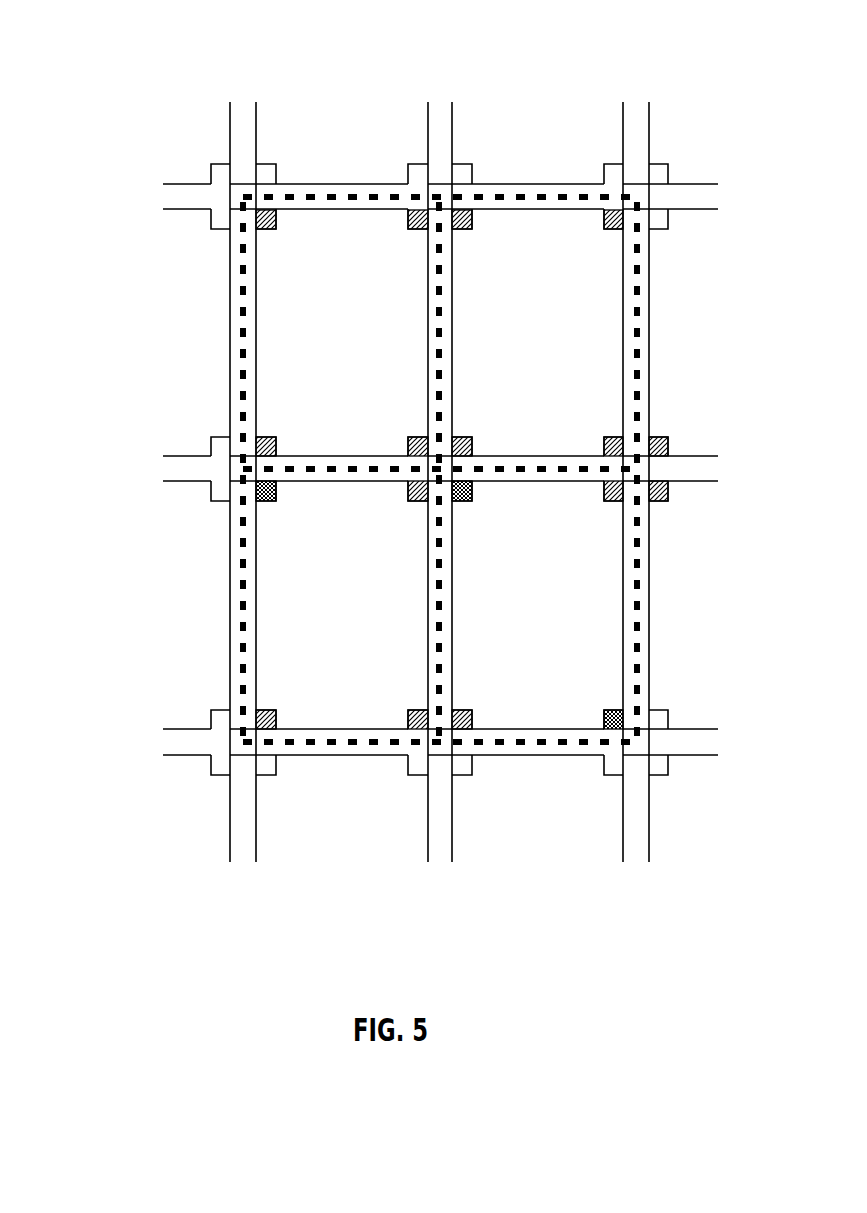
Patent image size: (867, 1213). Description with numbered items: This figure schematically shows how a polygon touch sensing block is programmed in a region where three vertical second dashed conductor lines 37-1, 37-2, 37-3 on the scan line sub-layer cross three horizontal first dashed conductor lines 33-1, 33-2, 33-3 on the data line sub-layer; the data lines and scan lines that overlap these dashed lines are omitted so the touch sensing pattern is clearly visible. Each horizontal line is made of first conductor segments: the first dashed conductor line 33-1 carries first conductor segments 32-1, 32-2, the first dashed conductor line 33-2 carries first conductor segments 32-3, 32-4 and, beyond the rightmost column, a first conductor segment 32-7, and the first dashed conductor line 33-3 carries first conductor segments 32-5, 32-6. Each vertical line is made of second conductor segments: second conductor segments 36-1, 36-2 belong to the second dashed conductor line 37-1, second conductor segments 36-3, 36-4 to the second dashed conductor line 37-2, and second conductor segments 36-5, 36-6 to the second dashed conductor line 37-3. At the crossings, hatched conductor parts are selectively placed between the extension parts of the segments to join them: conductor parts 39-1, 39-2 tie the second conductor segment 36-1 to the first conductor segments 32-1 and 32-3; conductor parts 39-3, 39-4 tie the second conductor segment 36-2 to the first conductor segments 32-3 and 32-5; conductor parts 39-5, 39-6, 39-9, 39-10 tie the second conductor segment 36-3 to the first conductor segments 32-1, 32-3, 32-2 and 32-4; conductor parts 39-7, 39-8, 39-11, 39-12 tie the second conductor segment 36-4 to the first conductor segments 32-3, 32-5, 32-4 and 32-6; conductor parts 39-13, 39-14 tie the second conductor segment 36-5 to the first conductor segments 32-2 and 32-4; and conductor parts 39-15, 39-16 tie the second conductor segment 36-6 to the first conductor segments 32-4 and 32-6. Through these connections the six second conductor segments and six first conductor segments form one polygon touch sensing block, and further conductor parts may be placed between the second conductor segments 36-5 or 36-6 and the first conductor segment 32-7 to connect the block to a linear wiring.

The second dashed conductor line 37-1 is at (243, 72).
The second dashed conductor line 37-2 is at (440, 72).
The second dashed conductor line 37-3 is at (637, 72).
The first dashed conductor line 33-1 is at (140, 198).
The first dashed conductor line 33-2 is at (140, 468).
The first dashed conductor line 33-3 is at (140, 742).
The first conductor segment 32-1 is at (345, 183).
The first conductor segment 32-2 is at (541, 183).
The first conductor segment 32-3 is at (346, 456).
The first conductor segment 32-4 is at (543, 456).
The first conductor segment 32-5 is at (345, 756).
The first conductor segment 32-6 is at (541, 756).
The first conductor segment 32-7 is at (697, 452).
The second conductor segment 36-1 is at (230, 337).
The second conductor segment 36-2 is at (230, 596).
The second conductor segment 36-3 is at (428, 338).
The second conductor segment 36-4 is at (428, 596).
The second conductor segment 36-5 is at (623, 337).
The second conductor segment 36-6 is at (623, 596).
The conductor part 39-1 is at (268, 229).
The conductor part 39-2 is at (270, 437).
The conductor part 39-3 is at (270, 501).
The conductor part 39-4 is at (270, 710).
The conductor part 39-5 is at (415, 229).
The conductor part 39-6 is at (412, 437).
The conductor part 39-7 is at (412, 501).
The conductor part 39-8 is at (412, 710).
The conductor part 39-9 is at (465, 229).
The conductor part 39-10 is at (465, 437).
The conductor part 39-11 is at (465, 501).
The conductor part 39-12 is at (467, 710).
The conductor part 39-13 is at (610, 229).
The conductor part 39-14 is at (610, 437).
The conductor part 39-15 is at (610, 501).
The conductor part 39-16 is at (610, 710).